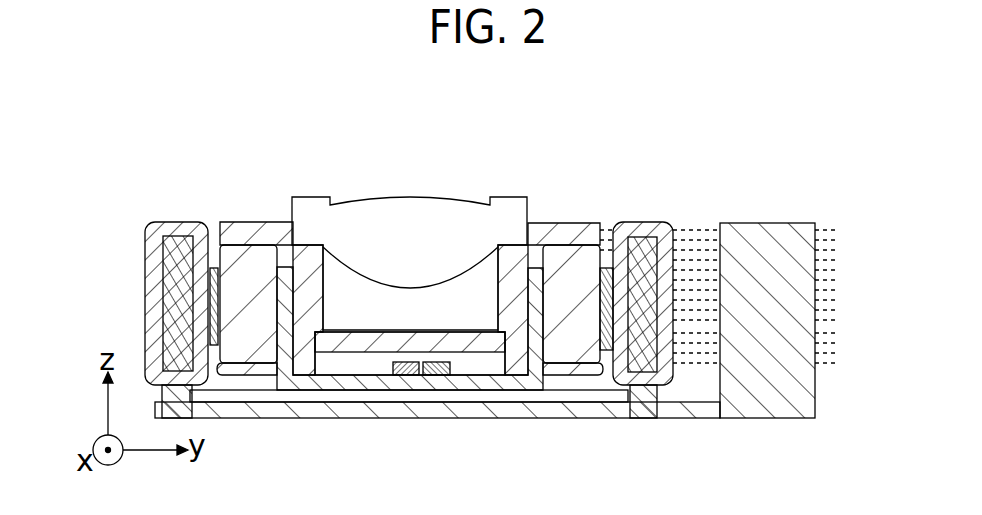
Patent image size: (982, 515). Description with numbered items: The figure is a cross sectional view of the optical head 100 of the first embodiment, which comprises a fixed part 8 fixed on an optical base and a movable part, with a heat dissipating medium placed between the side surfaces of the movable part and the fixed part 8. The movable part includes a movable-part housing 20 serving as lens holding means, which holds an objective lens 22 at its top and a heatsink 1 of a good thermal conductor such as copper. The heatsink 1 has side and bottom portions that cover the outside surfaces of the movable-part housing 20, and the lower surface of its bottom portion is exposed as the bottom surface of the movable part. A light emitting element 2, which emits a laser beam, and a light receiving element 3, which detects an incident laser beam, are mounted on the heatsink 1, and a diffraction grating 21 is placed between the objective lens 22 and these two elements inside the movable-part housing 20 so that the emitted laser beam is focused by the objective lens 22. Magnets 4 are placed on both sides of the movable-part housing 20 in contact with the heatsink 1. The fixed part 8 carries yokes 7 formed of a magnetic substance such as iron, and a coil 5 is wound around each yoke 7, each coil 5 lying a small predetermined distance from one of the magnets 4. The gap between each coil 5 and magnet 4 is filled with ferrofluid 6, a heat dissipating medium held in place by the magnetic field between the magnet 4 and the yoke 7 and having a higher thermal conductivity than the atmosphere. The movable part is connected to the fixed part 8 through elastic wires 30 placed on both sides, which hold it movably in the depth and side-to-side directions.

The optical head 100 is at (314, 169).
The heatsink 1 is at (303, 386).
The light emitting element 2 is at (397, 377).
The light receiving element 3 is at (438, 377).
The diffraction grating 21 is at (473, 346).
The objective lens 22 is at (417, 213).
The movable-part housing 20 is at (548, 228).
The magnets 4 is at (250, 253).
The coil 5 is at (180, 228).
The ferrofluid 6 is at (213, 346).
The yokes 7 is at (170, 267).
The fixed part 8 is at (767, 233).
The wires 30 is at (695, 230).